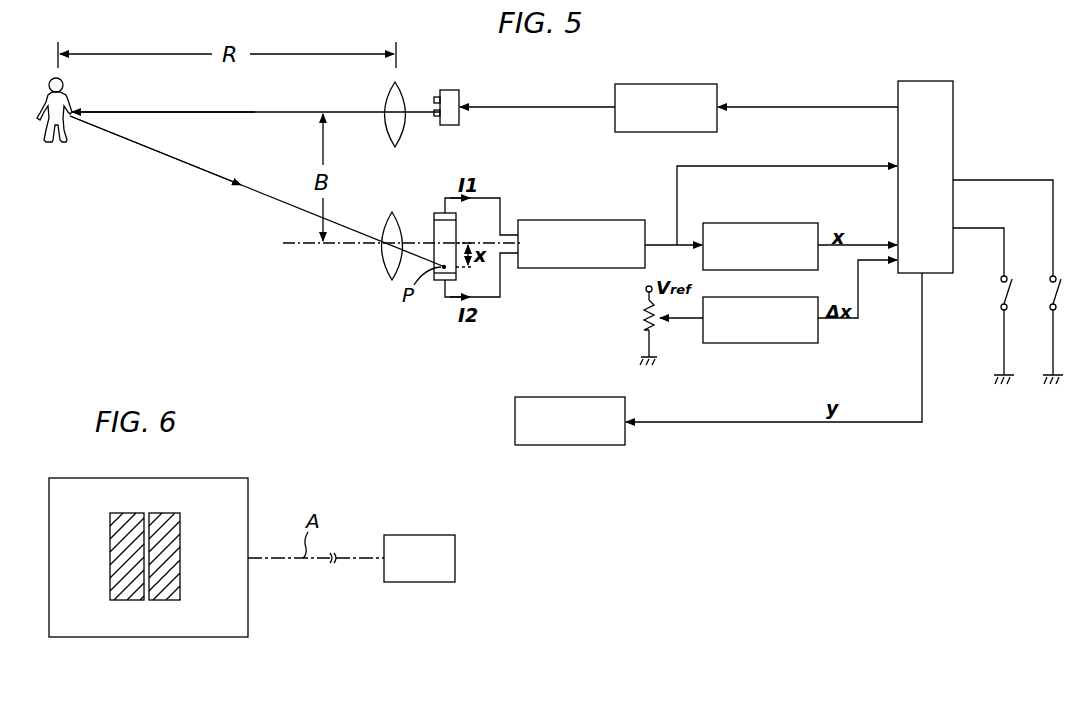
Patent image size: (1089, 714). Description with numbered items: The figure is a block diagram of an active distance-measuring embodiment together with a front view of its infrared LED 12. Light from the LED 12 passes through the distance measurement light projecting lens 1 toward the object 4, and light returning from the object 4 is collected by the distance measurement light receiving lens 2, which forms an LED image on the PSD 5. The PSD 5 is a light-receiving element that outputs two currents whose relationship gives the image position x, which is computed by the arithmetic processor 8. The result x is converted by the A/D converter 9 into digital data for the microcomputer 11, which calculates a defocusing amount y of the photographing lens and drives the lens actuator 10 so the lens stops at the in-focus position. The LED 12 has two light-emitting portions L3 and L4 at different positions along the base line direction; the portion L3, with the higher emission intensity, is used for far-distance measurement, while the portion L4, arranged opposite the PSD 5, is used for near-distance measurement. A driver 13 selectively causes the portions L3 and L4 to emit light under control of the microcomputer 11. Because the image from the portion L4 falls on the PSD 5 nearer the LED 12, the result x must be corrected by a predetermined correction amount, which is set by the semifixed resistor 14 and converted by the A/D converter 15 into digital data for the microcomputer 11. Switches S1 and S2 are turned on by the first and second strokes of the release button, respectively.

In FIG. 5, the distance measurement light projecting lens 1 is at (386, 133).
In FIG. 5, the distance measurement light receiving lens 2 is at (386, 268).
In FIG. 5, the object 4 is at (68, 95).
In FIG. 5, the PSD (Position Sensitive Device) 5 is at (436, 228).
In FIG. 6, the PSD (Position Sensitive Device) 5 is at (433, 535).
In FIG. 5, the arithmetic processor 8 is at (622, 220).
In FIG. 5, the A/D converter 9 is at (800, 223).
In FIG. 5, the lens actuator 10 is at (598, 397).
In FIG. 5, the microcomputer 11 is at (933, 81).
In FIG. 5, the infrared LED 12 is at (446, 108).
In FIG. 6, the infrared LED 12 is at (148, 563).
In FIG. 5, the driver 13 is at (700, 84).
In FIG. 5, the semifixed resistor 14 is at (642, 315).
In FIG. 5, the A/D converter 15 is at (800, 297).
In FIG. 5, the light-emitting portion L3 is at (433, 114).
In FIG. 6, the light-emitting portion L3 is at (163, 595).
In FIG. 5, the light-emitting portion L4 is at (433, 99).
In FIG. 6, the light-emitting portion L4 is at (126, 595).
In FIG. 5, the switch S1 is at (1016, 330).
In FIG. 5, the switch S2 is at (1065, 330).